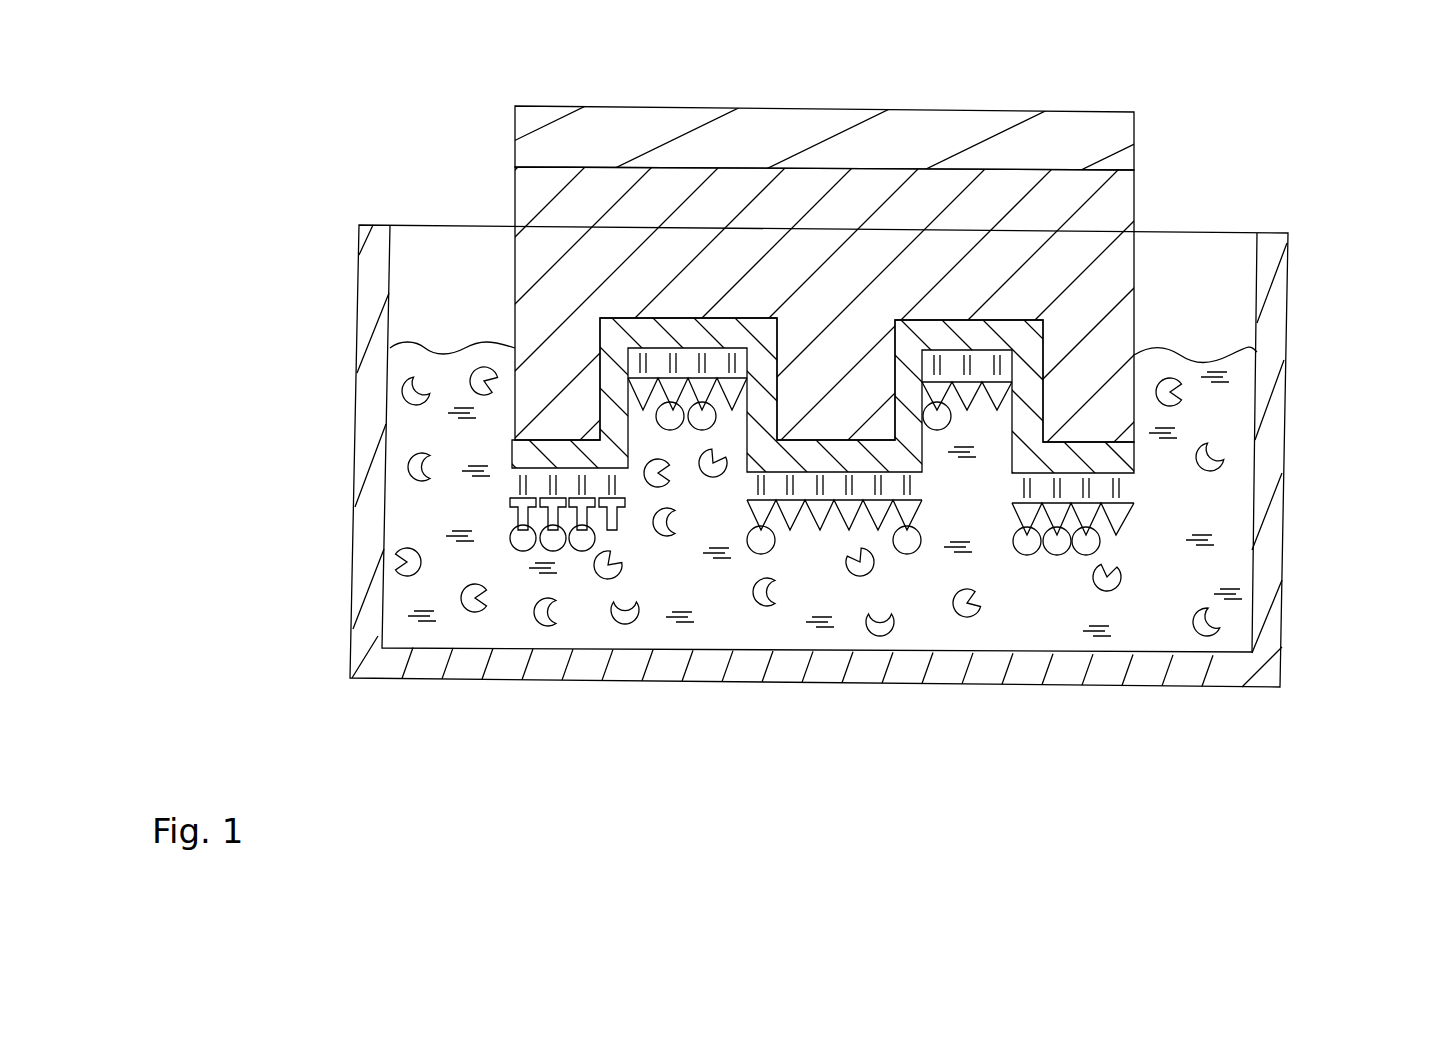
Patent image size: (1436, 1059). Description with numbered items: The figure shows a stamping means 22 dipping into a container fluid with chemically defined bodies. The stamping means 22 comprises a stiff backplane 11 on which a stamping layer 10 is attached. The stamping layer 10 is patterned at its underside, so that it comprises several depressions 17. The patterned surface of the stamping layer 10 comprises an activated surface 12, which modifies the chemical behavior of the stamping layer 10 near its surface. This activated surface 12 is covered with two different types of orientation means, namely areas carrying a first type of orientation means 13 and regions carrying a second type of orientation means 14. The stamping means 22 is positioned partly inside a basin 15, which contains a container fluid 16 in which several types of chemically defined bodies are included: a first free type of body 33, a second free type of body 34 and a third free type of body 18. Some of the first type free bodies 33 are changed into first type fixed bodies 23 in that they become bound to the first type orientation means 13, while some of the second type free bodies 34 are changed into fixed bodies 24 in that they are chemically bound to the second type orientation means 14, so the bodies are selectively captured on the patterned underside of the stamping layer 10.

The stamping layer 10 is at (1120, 213).
The stiff backplane 11 is at (980, 127).
The activated surface 12 is at (680, 328).
The first type of orientation means 13 is at (640, 388).
The second type of orientation means 14 is at (522, 507).
The basin 15 is at (1270, 318).
The container fluid 16 is at (1230, 544).
The depressions 17 is at (737, 443).
The third free type of body 18 is at (1210, 640).
The stamping means 22 is at (868, 100).
The first type fixed bodies 23 is at (675, 423).
The first type fixed bodies 24 is at (522, 551).
The first free type of body 33 is at (1115, 590).
The second free type of body 34 is at (973, 617).